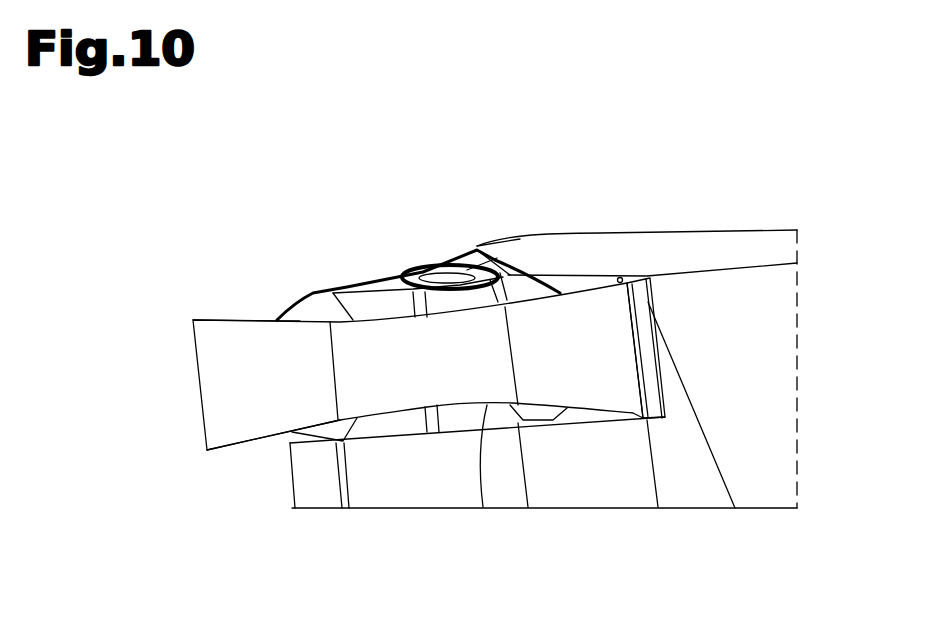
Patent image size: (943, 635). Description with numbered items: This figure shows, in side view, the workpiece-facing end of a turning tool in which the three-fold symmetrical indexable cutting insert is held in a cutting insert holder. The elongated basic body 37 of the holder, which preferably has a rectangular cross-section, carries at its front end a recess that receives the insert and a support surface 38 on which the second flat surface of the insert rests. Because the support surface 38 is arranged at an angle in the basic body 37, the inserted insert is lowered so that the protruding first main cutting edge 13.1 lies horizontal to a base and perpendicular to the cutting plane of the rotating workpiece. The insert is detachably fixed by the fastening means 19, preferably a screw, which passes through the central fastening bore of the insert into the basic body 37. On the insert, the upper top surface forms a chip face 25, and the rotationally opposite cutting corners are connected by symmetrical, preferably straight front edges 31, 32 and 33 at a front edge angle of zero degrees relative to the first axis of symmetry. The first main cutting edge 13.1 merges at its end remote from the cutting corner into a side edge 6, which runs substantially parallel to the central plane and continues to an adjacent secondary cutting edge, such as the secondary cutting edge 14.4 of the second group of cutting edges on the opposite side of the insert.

The side edge 6 is at (480, 256).
The first main cutting edge 13.1 is at (237, 318).
The secondary cutting edge 14.4 is at (240, 447).
The fastening means 19 is at (413, 273).
The chip face 25 is at (353, 280).
The front edge 31 is at (198, 369).
The front edge 32 is at (637, 330).
The front edge 33 is at (477, 250).
The basic body 37 is at (761, 408).
The support surface 38 is at (350, 437).